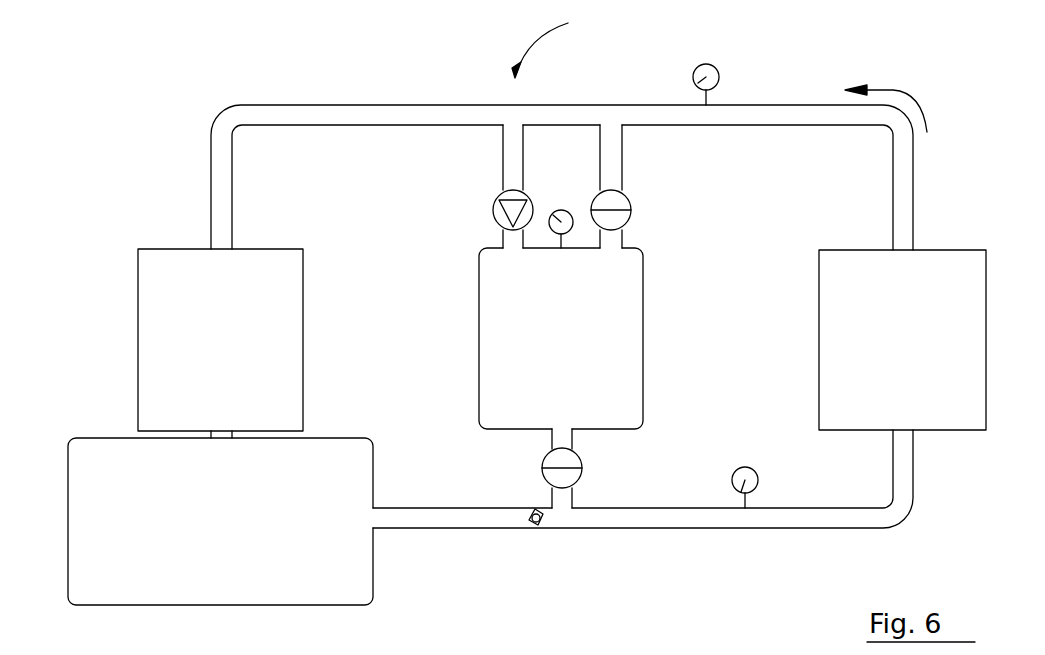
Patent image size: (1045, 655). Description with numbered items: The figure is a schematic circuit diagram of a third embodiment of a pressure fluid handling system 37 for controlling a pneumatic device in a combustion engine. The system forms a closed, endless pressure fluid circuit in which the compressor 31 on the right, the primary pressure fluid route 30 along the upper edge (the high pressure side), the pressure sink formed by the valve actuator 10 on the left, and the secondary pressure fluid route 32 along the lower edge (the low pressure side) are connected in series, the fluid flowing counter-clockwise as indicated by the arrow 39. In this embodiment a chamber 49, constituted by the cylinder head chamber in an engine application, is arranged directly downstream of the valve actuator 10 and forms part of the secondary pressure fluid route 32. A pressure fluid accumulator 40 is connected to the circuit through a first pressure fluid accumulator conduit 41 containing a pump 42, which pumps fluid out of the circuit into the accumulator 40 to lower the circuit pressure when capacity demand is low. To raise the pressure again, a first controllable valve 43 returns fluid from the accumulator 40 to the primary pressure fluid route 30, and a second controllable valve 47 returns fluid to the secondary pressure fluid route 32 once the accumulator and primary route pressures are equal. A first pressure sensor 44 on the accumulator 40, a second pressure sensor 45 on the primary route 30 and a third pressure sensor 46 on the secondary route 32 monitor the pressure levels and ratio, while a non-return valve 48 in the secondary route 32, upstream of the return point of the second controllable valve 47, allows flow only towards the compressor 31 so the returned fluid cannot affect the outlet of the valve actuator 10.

The valve actuator 10 is at (283, 335).
The primary pressure fluid route 30 is at (355, 102).
The compressor 31 is at (832, 341).
The secondary pressure fluid route 32 is at (655, 518).
The pressure fluid handling system 37 is at (558, 39).
The arrow 39 is at (886, 90).
The pressure fluid accumulator 40 is at (630, 345).
The first pressure fluid accumulator conduit 41 is at (513, 153).
The pump 42 is at (497, 215).
The first controllable valve 43 is at (617, 202).
The first pressure sensor 44 is at (563, 210).
The second pressure sensor 45 is at (705, 64).
The third pressure sensor 46 is at (745, 467).
The second controllable valve 47 is at (578, 458).
The non-return valve 48 is at (536, 528).
The chamber 49 is at (362, 466).